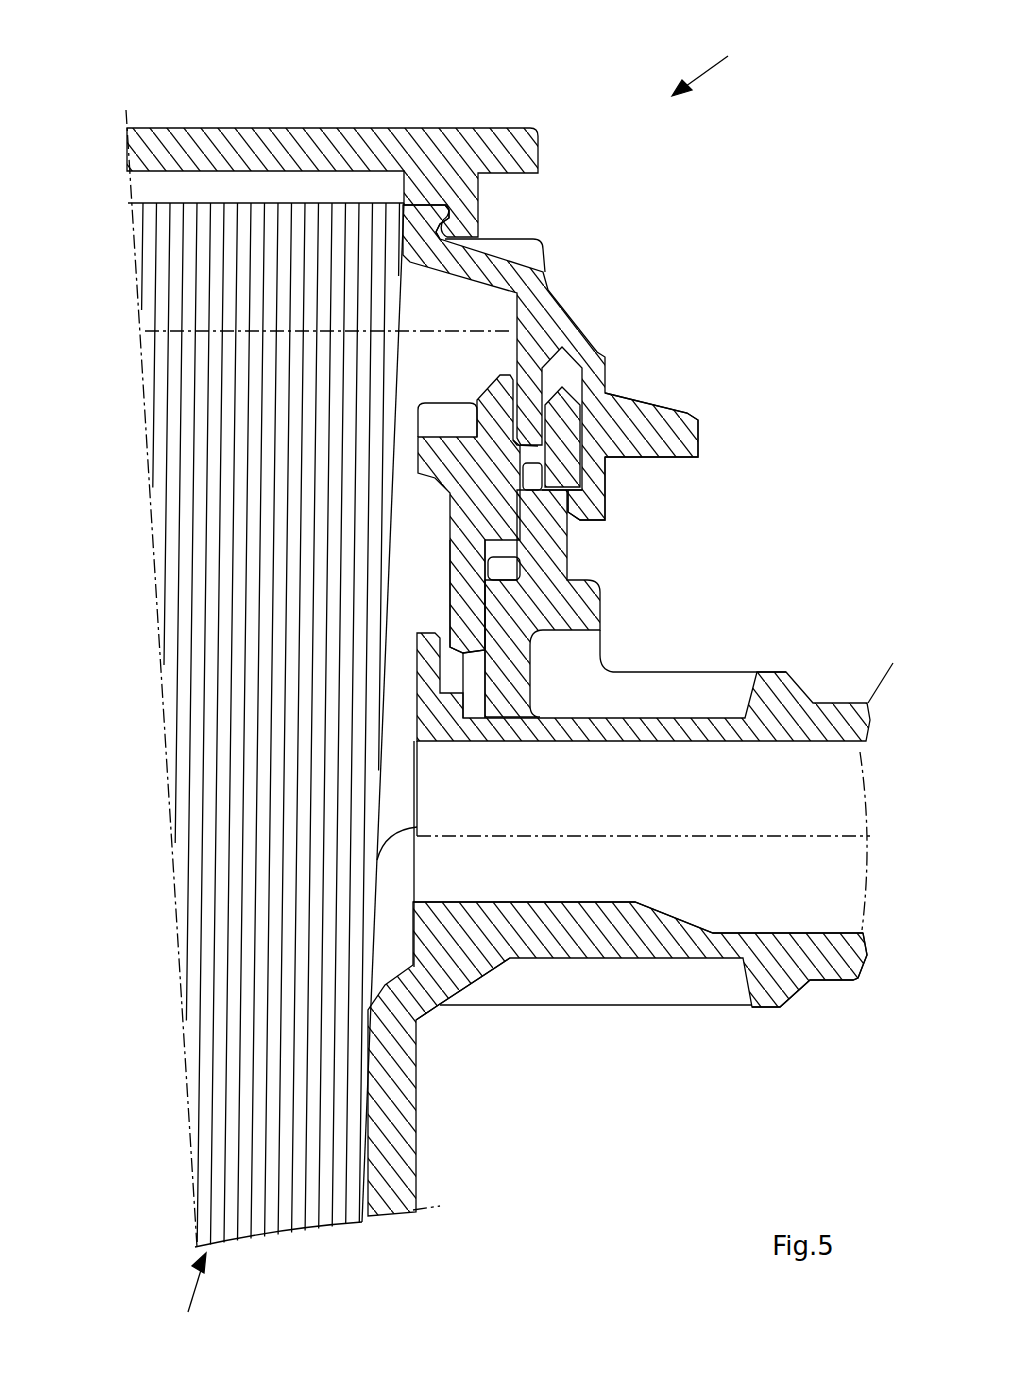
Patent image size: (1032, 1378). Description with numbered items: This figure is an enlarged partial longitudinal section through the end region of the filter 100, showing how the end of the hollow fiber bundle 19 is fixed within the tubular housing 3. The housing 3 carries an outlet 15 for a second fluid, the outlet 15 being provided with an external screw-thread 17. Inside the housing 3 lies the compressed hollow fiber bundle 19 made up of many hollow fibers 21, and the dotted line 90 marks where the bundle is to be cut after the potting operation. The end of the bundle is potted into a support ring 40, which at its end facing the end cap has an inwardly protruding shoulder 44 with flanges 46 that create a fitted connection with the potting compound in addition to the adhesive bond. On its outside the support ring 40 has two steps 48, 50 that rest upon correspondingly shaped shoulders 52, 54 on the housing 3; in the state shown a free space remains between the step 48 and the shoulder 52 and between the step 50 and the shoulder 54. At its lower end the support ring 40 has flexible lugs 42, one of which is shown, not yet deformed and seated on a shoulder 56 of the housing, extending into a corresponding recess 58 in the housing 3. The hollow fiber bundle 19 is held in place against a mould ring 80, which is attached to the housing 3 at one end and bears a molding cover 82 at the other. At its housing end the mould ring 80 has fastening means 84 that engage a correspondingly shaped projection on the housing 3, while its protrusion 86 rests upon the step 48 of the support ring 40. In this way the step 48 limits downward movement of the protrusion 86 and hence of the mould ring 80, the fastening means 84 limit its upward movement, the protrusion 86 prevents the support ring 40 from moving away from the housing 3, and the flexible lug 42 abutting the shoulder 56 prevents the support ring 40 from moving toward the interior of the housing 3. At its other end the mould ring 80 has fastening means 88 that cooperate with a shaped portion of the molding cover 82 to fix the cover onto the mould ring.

The housing 3 is at (391, 1165).
The outlet 15 is at (585, 935).
The external screw-thread 17 is at (768, 1008).
The hollow fiber bundle 19 is at (184, 1298).
The hollow fibers 21 is at (285, 1195).
The support ring 40 is at (450, 552).
The flexible lug 42 is at (455, 667).
The shoulder 44 is at (432, 455).
The flanges 46 is at (425, 412).
The step 48 is at (615, 400).
The step 50 is at (522, 560).
The shoulder 52 is at (572, 497).
The shoulder 54 is at (590, 578).
The shoulder 56 is at (545, 675).
The recess 58 is at (480, 712).
The mould ring 80 is at (530, 250).
The molding cover 82 is at (178, 124).
The fastening means 84 is at (607, 490).
The protrusion 86 is at (557, 398).
The fastening means 88 is at (458, 208).
The dotted line 90 is at (170, 333).
The filter 100 is at (716, 60).